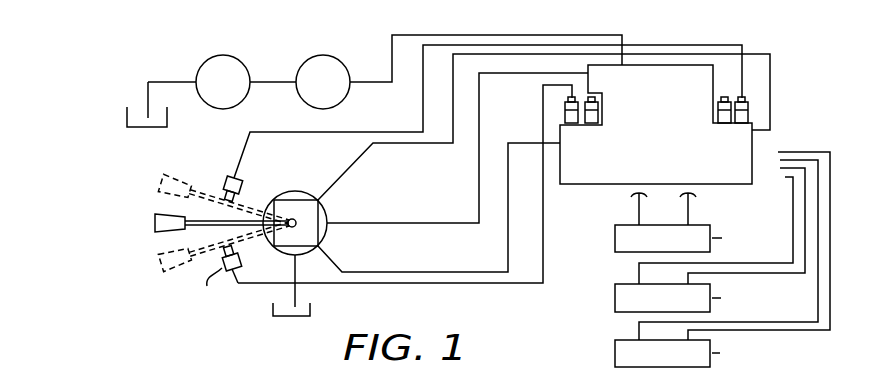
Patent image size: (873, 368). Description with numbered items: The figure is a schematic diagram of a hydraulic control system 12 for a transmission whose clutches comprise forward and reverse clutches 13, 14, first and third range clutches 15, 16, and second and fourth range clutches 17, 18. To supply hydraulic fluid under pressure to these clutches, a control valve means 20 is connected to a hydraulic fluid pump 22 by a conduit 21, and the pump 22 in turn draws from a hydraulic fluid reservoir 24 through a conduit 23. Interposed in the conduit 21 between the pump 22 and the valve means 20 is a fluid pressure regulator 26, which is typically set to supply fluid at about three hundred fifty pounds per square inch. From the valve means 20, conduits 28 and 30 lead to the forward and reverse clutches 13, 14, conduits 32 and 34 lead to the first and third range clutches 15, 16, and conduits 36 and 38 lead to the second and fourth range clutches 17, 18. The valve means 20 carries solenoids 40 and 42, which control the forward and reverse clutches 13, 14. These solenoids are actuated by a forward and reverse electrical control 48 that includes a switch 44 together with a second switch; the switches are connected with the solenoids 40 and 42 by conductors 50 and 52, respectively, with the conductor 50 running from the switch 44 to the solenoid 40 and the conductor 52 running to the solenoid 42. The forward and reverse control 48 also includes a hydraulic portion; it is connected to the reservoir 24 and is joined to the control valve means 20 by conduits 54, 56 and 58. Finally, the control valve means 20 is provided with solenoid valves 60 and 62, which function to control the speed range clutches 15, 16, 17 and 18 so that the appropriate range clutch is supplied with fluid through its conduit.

The control system 12 is at (148, 53).
The forward clutch 13 is at (653, 248).
The reverse clutch 14 is at (615, 237).
The first range clutch 15 is at (653, 302).
The third range clutch 16 is at (615, 297).
The second range clutch 17 is at (660, 354).
The fourth range clutch 18 is at (615, 352).
The control valve means 20 is at (674, 114).
The conduit 21 is at (392, 44).
The hydraulic fluid pump 22 is at (218, 56).
The conduit 23 is at (147, 89).
The hydraulic fluid reservoir 24 is at (148, 130).
The fluid pressure regulator 26 is at (322, 55).
The conduit 28 is at (638, 208).
The conduit 30 is at (693, 208).
The conduit 32 is at (777, 190).
The conduit 34 is at (787, 176).
The conduit 36 is at (818, 193).
The conduit 38 is at (830, 273).
The solenoid 40 is at (750, 112).
The solenoid 42 is at (565, 110).
The switch 44 is at (224, 184).
The forward and reverse control 48 is at (190, 227).
The conductor 50 is at (327, 133).
The conductor 52 is at (421, 284).
The conduit 54 is at (418, 271).
The conduit 56 is at (427, 222).
The conduit 58 is at (432, 143).
The solenoid valve 60 is at (598, 110).
The solenoid valve 62 is at (718, 112).